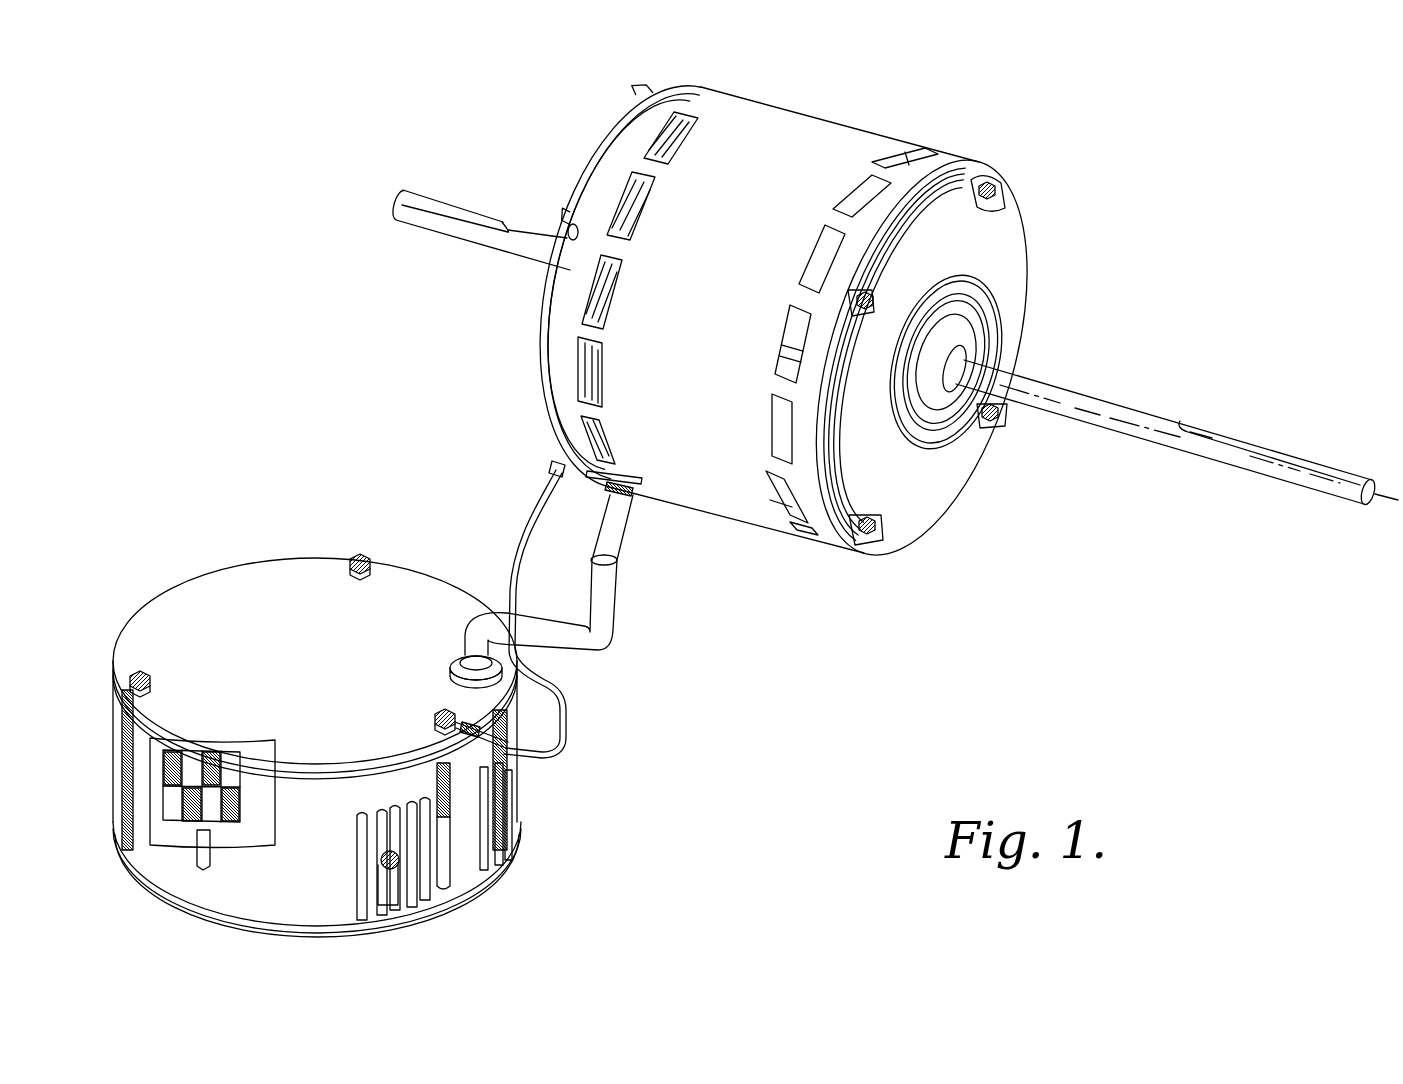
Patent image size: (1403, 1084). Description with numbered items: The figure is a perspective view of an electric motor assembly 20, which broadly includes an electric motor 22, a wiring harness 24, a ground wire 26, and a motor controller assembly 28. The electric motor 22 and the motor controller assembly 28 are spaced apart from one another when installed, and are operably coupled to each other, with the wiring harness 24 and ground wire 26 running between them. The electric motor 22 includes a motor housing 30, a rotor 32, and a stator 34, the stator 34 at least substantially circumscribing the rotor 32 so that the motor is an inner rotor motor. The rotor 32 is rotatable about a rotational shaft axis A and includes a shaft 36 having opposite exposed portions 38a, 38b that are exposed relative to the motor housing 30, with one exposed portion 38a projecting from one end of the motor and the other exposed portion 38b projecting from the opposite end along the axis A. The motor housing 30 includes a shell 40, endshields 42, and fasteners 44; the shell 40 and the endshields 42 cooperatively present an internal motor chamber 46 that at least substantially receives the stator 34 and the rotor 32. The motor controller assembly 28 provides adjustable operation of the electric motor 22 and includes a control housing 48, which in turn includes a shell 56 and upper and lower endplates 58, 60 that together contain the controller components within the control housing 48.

The electric motor assembly 20 is at (1216, 246).
The electric motor 22 is at (805, 135).
The wiring harness 24 is at (605, 600).
The ground wire 26 is at (530, 520).
The motor controller assembly 28 is at (197, 597).
The motor housing 30 is at (820, 518).
The rotor 32 is at (1080, 385).
The stator 34 is at (867, 193).
The shaft 36 is at (528, 240).
The exposed portion 38a is at (410, 220).
The exposed portion 38b is at (1300, 448).
The shell 40 is at (728, 110).
The endshields 42 is at (612, 135).
The fasteners 44 is at (1000, 195).
The internal motor chamber 46 is at (672, 140).
The control housing 48 is at (490, 830).
The shell 56 is at (240, 890).
The upper endplate 58 is at (302, 562).
The lower endplate 60 is at (375, 923).
The rotational shaft axis A is at (1210, 445).